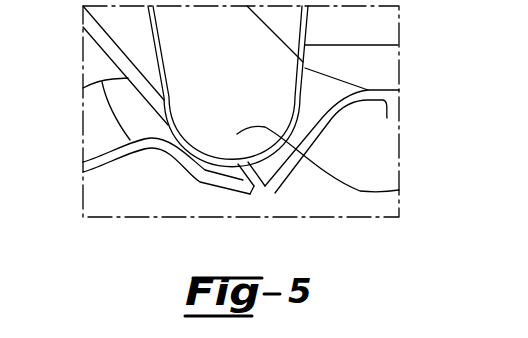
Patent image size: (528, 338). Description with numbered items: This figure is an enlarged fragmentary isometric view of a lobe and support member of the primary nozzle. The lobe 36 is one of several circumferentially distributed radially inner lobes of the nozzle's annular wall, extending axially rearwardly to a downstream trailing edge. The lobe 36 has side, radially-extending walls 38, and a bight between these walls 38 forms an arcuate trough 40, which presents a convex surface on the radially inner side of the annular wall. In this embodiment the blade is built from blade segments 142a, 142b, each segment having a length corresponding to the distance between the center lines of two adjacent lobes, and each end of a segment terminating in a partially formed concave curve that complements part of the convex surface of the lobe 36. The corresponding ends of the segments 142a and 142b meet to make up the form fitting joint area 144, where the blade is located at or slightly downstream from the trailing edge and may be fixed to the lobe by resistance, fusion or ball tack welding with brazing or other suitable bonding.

The lobe 36 is at (314, 27).
The side wall 38 is at (162, 50).
The arcuate trough 40 is at (392, 190).
The blade segment 142a is at (103, 170).
The blade segment 142b is at (387, 118).
The form fitting joint area 144 is at (283, 188).